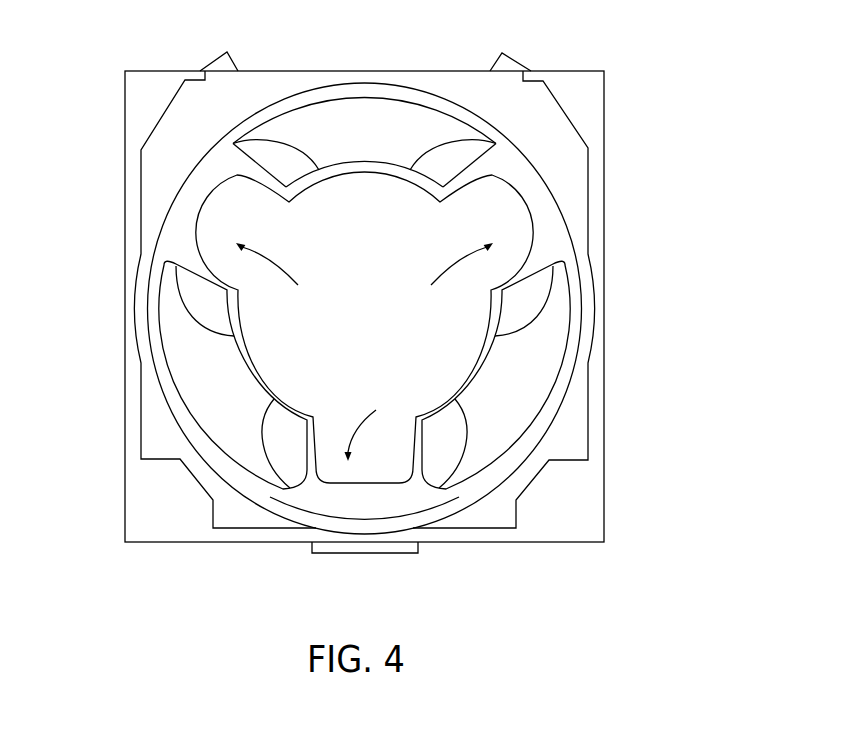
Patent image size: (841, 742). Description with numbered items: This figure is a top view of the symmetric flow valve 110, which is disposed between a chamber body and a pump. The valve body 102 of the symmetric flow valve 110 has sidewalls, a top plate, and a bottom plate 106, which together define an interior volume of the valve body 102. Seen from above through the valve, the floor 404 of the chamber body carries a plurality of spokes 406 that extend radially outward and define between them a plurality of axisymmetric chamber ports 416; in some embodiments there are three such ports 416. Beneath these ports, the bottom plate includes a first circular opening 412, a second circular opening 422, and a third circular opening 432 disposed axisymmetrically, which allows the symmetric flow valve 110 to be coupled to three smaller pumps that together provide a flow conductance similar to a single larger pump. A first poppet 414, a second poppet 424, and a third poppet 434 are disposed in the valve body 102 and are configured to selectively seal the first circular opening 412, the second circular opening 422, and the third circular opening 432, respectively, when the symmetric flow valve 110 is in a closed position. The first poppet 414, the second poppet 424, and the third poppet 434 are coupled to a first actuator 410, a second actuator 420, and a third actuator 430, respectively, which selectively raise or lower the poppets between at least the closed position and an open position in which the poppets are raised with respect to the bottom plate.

The valve body 102 is at (124, 107).
The bottom plate 106 is at (546, 344).
The symmetric flow valve 110 is at (636, 76).
The floor 404 is at (384, 316).
The spokes 406 is at (364, 352).
The first actuator 410 is at (207, 65).
The first circular opening 412 is at (317, 160).
The first poppet 414 is at (279, 170).
The axisymmetric chamber ports 416 is at (365, 150).
The second actuator 420 is at (520, 63).
The second circular opening 422 is at (412, 160).
The second poppet 424 is at (450, 170).
The third actuator 430 is at (363, 553).
The third circular opening 432 is at (263, 427).
The third poppet 434 is at (466, 427).